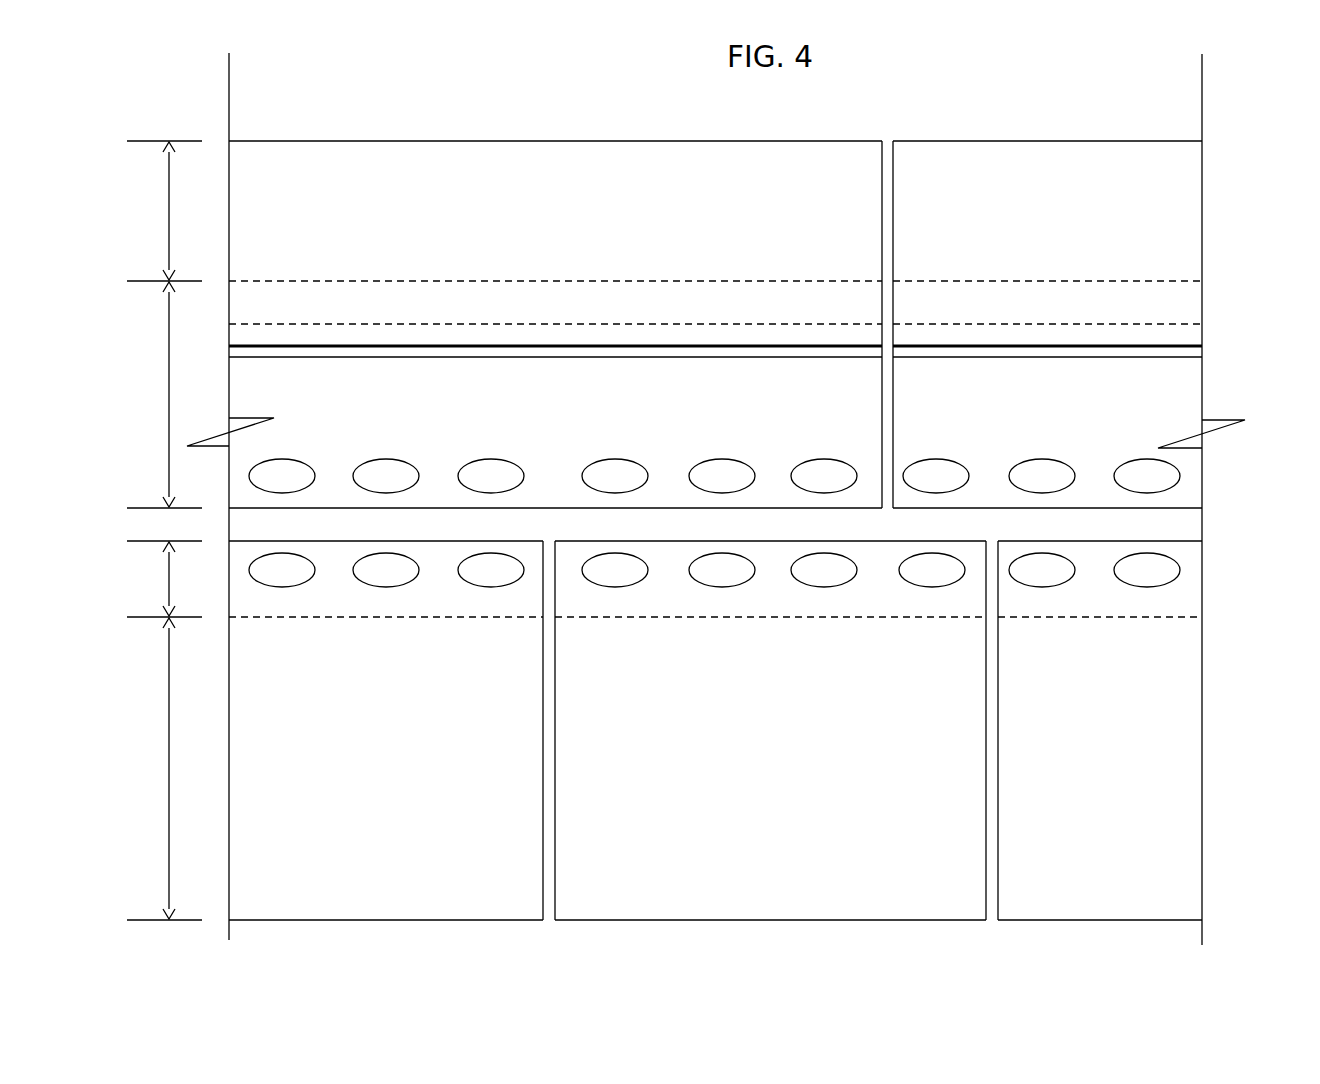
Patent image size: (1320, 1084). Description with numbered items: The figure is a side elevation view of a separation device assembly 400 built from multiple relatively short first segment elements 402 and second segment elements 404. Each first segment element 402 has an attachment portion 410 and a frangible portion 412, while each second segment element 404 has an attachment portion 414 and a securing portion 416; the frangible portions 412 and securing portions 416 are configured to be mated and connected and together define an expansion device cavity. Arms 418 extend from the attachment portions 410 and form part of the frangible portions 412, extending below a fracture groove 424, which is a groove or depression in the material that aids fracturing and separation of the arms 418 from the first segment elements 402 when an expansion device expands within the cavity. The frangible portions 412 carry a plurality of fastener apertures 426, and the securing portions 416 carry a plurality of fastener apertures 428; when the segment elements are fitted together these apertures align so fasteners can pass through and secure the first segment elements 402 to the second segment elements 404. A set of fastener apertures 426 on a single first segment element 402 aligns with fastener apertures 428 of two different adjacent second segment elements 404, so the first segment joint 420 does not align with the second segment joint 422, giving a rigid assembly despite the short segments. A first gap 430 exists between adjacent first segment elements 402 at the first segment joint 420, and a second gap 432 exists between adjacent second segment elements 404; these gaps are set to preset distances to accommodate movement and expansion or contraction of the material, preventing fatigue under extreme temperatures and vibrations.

The separation device assembly 400 is at (1236, 155).
The first segment elements 402 is at (459, 141).
The second segment elements 404 is at (520, 843).
The attachment portions 410 is at (160, 211).
The frangible portions 412 is at (160, 395).
The attachment portions 414 is at (160, 769).
The securing portions 416 is at (160, 579).
The arms 418 is at (510, 420).
The first segment joint 420 is at (887, 139).
The second segment joint 422 is at (549, 922).
The fracture groove 424 is at (565, 357).
The fastener apertures 426 is at (288, 476).
The fastener apertures 428 is at (385, 570).
The first gap 430 is at (795, 212).
The second gap 432 is at (460, 747).